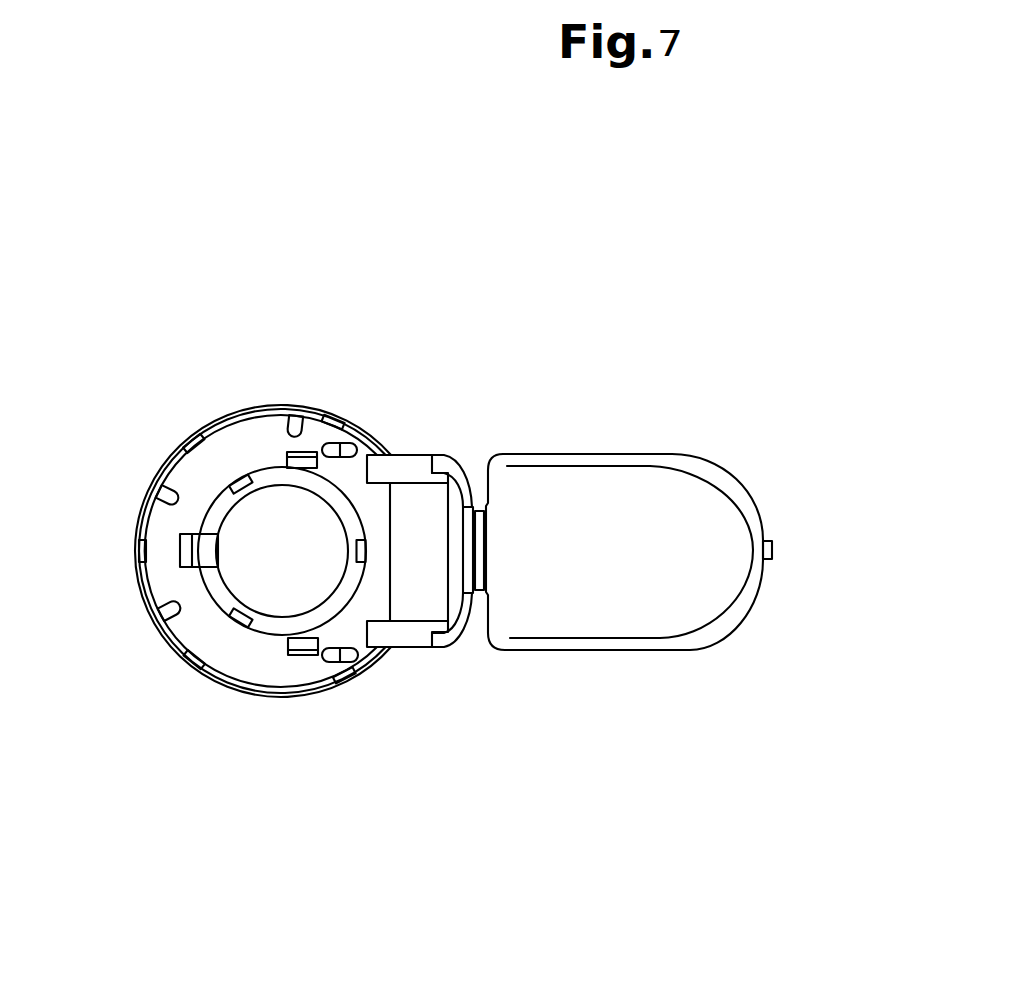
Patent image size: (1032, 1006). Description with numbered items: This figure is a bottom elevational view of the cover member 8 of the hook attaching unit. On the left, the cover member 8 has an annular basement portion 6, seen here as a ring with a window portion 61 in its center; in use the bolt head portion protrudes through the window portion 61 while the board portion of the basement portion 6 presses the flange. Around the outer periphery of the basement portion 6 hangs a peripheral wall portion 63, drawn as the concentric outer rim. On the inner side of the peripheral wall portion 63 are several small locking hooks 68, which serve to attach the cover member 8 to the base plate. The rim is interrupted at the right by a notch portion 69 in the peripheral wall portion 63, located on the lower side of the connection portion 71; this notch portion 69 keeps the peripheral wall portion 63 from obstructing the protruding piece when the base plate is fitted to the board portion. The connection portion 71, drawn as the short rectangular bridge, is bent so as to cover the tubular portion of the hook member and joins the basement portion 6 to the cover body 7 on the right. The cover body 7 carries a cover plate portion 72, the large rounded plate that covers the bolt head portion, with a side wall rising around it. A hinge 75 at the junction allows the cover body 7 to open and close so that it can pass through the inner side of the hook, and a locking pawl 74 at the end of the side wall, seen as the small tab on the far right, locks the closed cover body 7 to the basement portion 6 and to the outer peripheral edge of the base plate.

The basement portion 6 is at (322, 412).
The cover body 7 is at (670, 453).
The cover member 8 is at (583, 357).
The window portion 61 is at (257, 575).
The peripheral wall portion 63 is at (253, 687).
The locking hook 68 is at (234, 446).
The notch portion 69 is at (383, 633).
The connection portion 71 is at (410, 523).
The cover plate portion 72 is at (683, 530).
The locking pawl 74 is at (772, 549).
The hinge 75 is at (482, 543).